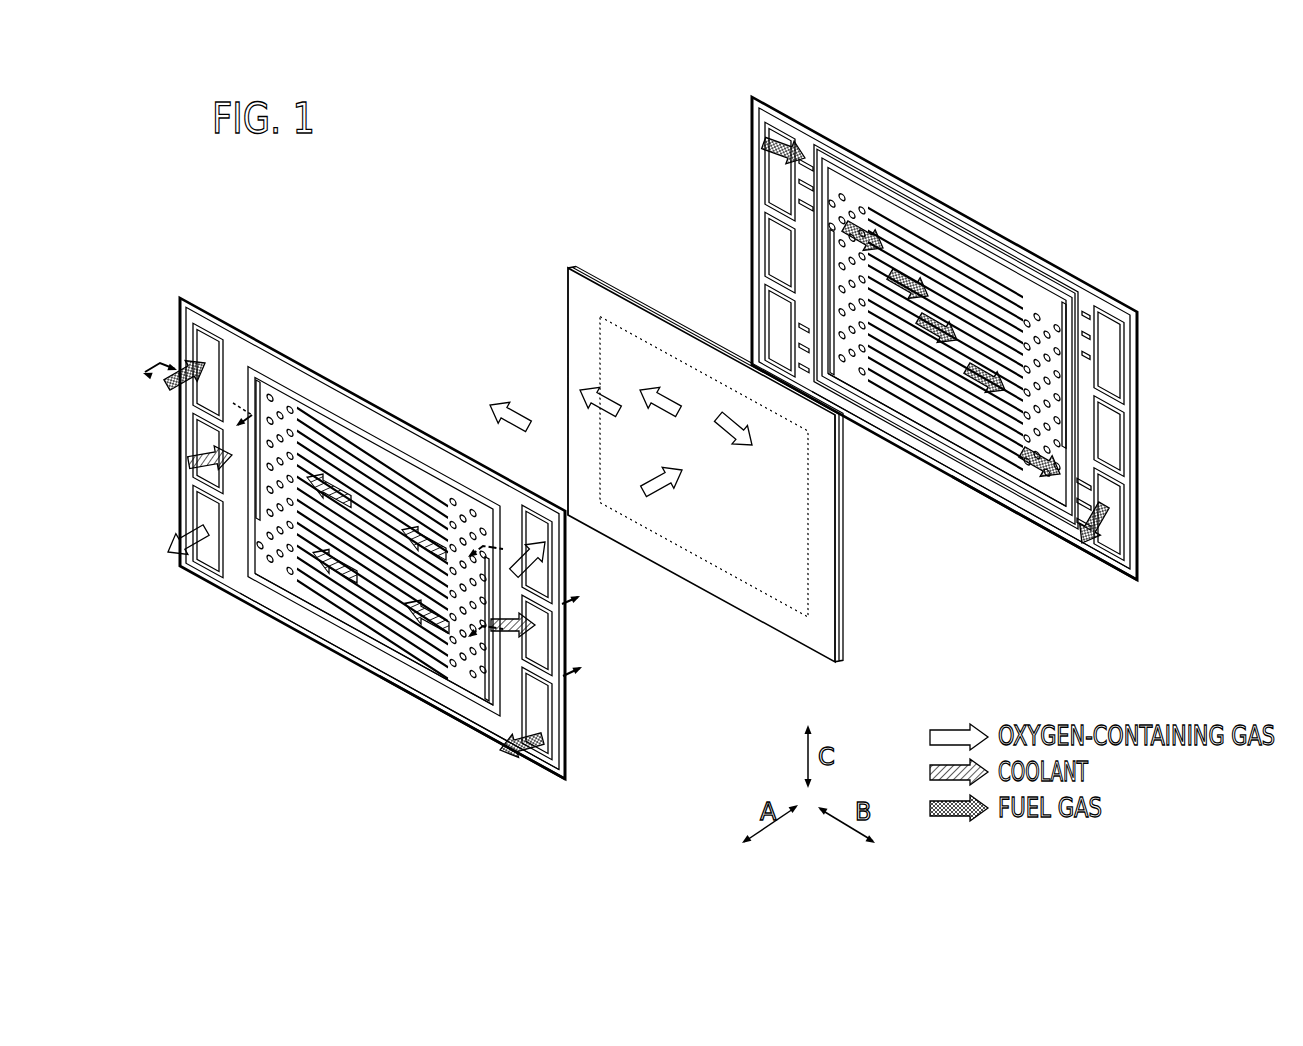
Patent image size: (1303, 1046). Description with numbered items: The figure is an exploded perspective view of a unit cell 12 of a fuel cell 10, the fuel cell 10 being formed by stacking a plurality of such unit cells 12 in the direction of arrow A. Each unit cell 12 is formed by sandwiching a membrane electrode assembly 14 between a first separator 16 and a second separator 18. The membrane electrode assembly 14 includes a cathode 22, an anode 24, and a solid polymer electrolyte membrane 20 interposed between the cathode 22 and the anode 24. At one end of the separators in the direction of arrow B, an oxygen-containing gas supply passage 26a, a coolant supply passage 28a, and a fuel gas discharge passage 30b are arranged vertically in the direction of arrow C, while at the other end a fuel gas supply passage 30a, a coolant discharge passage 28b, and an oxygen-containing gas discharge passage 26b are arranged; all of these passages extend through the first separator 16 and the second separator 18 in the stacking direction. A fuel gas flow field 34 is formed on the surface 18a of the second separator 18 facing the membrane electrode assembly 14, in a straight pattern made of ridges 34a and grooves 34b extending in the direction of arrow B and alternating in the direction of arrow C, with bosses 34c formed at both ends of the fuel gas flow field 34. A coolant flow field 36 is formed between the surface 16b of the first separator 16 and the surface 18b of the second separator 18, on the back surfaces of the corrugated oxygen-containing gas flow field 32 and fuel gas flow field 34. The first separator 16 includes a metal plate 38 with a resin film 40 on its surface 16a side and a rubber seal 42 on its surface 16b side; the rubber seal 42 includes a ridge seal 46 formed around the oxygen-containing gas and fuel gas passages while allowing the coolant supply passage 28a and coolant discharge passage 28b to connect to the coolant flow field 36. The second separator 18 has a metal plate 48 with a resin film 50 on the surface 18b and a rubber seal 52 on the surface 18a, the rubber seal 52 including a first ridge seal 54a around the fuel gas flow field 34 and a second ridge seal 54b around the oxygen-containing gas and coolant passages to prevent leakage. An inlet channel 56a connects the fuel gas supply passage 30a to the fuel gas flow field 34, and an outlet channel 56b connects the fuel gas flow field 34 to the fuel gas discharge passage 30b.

The fuel cell 10 is at (283, 238).
The unit cell 12 is at (236, 238).
The membrane electrode assembly 14 is at (564, 265).
The first separator 16 is at (178, 295).
The surface 16a is at (466, 712).
The surface 16b is at (452, 695).
The second separator 18 is at (748, 94).
The surface 18a is at (1022, 497).
The surface 18b is at (1038, 523).
The solid polymer electrolyte membrane 20 is at (845, 582).
The cathode 22 is at (753, 570).
The anode 24 is at (660, 327).
The oxygen-containing gas supply passage 26a is at (540, 578).
The oxygen-containing gas discharge passage 26b is at (212, 492).
The coolant supply passage 28a is at (545, 630).
The coolant discharge passage 28b is at (212, 426).
The fuel gas supply passage 30a is at (215, 330).
The fuel gas discharge passage 30b is at (545, 702).
The oxygen-containing gas flow field 32 is at (390, 546).
The fuel gas flow field 34 is at (1009, 318).
The ridges 34a is at (945, 293).
The grooves 34b is at (945, 385).
The bosses 34c is at (1016, 313).
The coolant flow field 36 is at (392, 466).
The metal plate 38 is at (374, 639).
The resin film 40 is at (374, 541).
The rubber seal 42 is at (258, 616).
The ridge seal 46 is at (341, 393).
The metal plate 48 is at (947, 439).
The resin film 50 is at (1142, 446).
The rubber seal 52 is at (1142, 412).
The first ridge seal 54a is at (992, 250).
The second ridge seal 54b is at (1018, 303).
The inlet channel 56a is at (800, 187).
The outlet channel 56b is at (1087, 484).